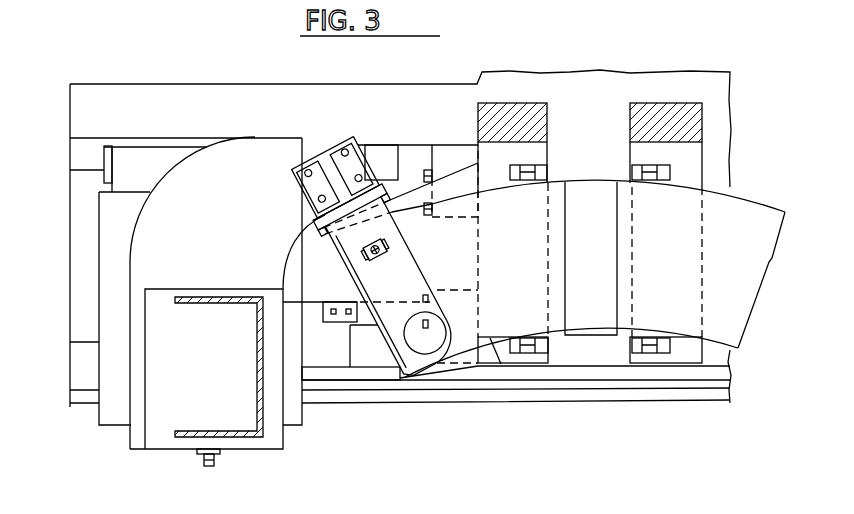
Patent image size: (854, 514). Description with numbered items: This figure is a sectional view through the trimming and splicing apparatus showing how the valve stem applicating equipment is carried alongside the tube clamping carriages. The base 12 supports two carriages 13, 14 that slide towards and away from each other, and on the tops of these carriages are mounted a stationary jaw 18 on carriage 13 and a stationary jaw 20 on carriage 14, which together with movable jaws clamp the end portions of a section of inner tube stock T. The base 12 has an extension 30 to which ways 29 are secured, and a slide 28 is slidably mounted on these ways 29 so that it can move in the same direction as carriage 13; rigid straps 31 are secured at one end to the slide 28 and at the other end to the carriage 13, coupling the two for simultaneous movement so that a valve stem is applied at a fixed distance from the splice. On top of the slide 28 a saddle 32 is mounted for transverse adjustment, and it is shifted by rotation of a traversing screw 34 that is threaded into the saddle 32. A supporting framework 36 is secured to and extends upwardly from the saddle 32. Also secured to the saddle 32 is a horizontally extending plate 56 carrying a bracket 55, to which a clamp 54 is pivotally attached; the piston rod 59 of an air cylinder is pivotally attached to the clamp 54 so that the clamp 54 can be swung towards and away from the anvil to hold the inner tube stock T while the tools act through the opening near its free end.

The base 12 is at (398, 402).
The carriage 13 is at (535, 362).
The carriage 14 is at (685, 362).
The stationary jaw 18 is at (547, 171).
The stationary jaw 20 is at (632, 176).
The slide 28 is at (130, 152).
The ways 29 is at (72, 158).
The extension 30 is at (75, 403).
The rigid straps 31 is at (398, 186).
The saddle 32 is at (108, 262).
The traversing screw 34 is at (203, 463).
The supporting framework 36 is at (258, 438).
The clamp 54 is at (413, 260).
The bracket 55 is at (362, 143).
The horizontally extending plate 56 is at (240, 148).
The piston rod 59 is at (376, 251).
The inner tube stock T is at (492, 340).